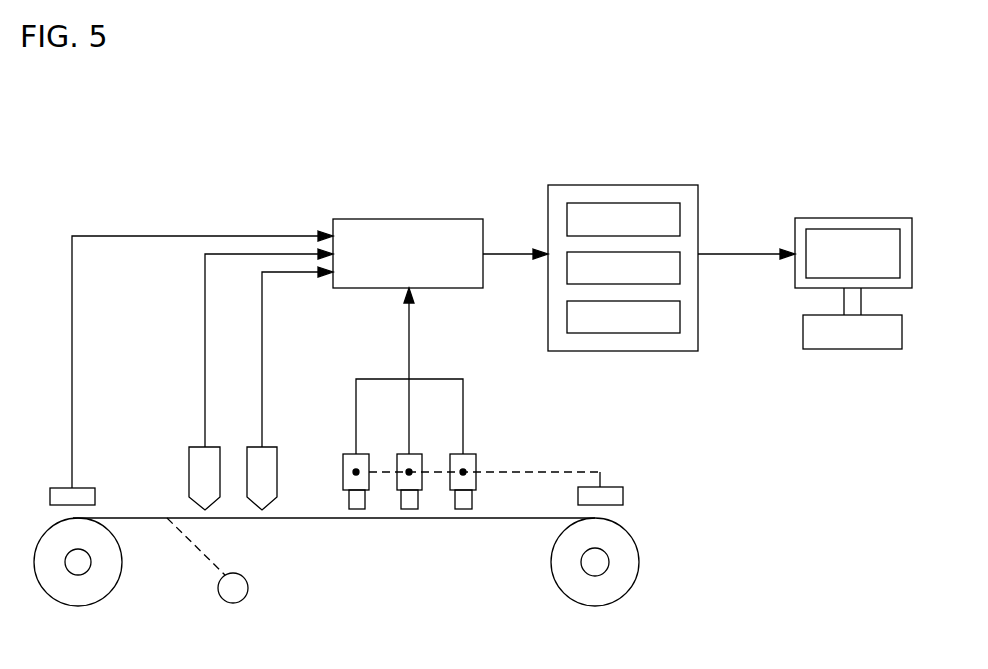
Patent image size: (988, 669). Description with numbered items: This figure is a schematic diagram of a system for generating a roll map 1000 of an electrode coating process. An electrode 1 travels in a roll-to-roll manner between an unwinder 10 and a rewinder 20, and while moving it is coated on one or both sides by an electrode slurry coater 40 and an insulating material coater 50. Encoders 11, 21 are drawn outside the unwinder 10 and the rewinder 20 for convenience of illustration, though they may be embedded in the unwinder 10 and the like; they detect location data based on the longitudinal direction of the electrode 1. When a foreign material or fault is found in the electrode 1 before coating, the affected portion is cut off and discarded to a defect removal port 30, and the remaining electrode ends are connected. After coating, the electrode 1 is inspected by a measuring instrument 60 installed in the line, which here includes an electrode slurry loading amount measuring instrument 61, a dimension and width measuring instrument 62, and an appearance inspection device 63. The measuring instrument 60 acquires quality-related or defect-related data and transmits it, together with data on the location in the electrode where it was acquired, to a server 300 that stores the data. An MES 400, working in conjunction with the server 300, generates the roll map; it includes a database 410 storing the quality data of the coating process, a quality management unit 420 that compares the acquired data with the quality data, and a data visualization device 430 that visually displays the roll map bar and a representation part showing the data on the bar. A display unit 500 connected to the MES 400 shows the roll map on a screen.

The system for generating a roll map 1000 is at (100, 170).
The electrode 1 is at (325, 520).
The unwinder 10 is at (115, 562).
The encoder 11 is at (63, 490).
The rewinder 20 is at (553, 566).
The encoder 21 is at (608, 493).
The defect removal port 30 is at (248, 586).
The electrode slurry coater 40 is at (193, 470).
The insulating material coater 50 is at (270, 460).
The measuring instrument 60 is at (418, 398).
The electrode slurry loading amount measuring instrument 61 is at (341, 484).
The dimension and width measuring instrument 62 is at (404, 456).
The appearance inspection device 63 is at (470, 460).
The server 300 is at (407, 222).
The MES 400 is at (671, 233).
The database 410 is at (678, 216).
The quality management unit 420 is at (678, 270).
The data visualization device 430 is at (678, 316).
The display unit 500 is at (856, 217).